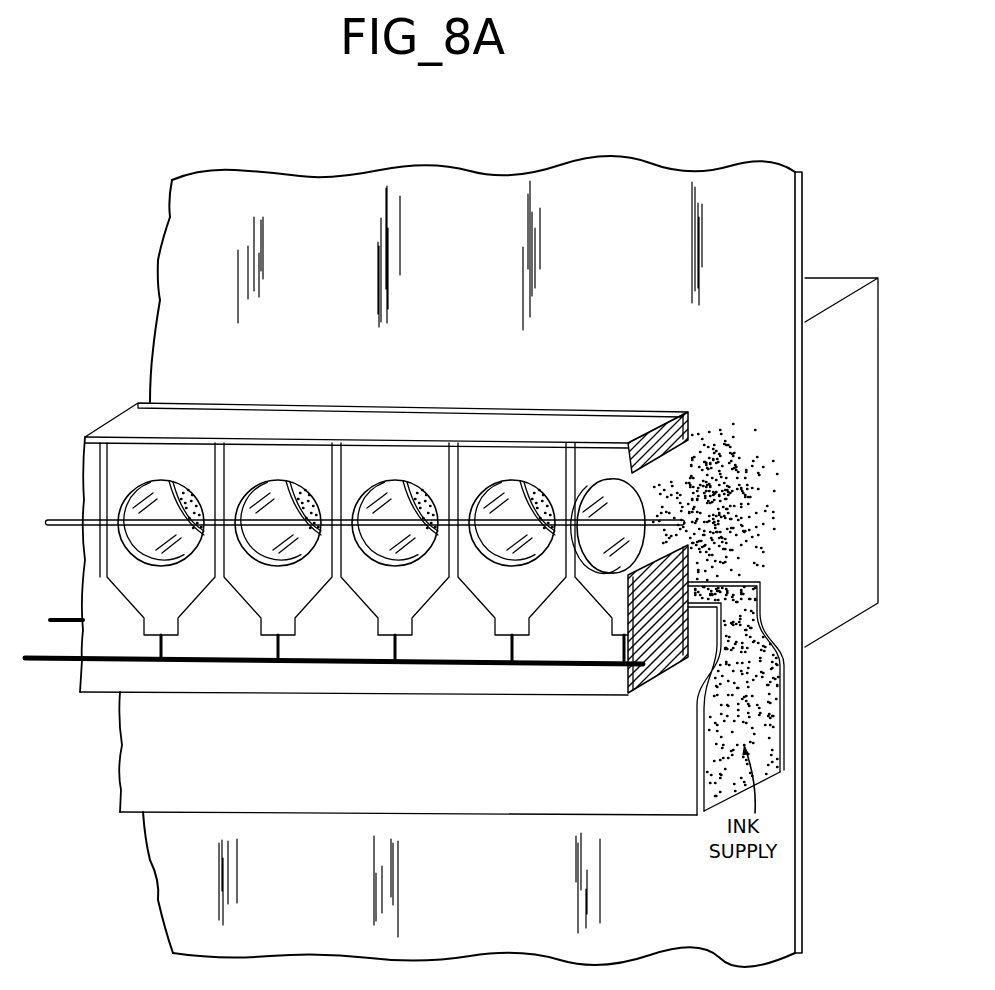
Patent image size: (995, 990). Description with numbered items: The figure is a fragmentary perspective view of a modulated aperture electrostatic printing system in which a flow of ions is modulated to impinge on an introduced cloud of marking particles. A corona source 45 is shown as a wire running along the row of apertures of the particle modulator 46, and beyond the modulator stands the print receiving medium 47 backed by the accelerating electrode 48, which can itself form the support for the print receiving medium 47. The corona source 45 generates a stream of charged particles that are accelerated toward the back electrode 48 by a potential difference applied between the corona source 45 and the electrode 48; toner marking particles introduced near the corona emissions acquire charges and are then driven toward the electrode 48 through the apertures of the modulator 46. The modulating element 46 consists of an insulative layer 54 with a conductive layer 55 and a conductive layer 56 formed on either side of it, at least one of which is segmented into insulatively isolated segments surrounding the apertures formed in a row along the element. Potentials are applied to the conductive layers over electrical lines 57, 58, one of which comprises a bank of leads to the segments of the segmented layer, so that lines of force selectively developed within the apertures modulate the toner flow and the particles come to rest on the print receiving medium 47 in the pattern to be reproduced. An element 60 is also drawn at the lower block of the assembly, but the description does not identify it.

The corona source 45 is at (85, 512).
The particle modulator 46 is at (658, 397).
The print receiving medium 47 is at (792, 208).
The accelerating electrode 48 is at (850, 620).
The insulative layer 54 is at (193, 422).
The conductive layer 55 is at (283, 441).
The conductive layer 56 is at (278, 403).
The electrical line 57 is at (52, 665).
The electrical line 58 is at (63, 617).
The ink manifold block 60 is at (523, 817).